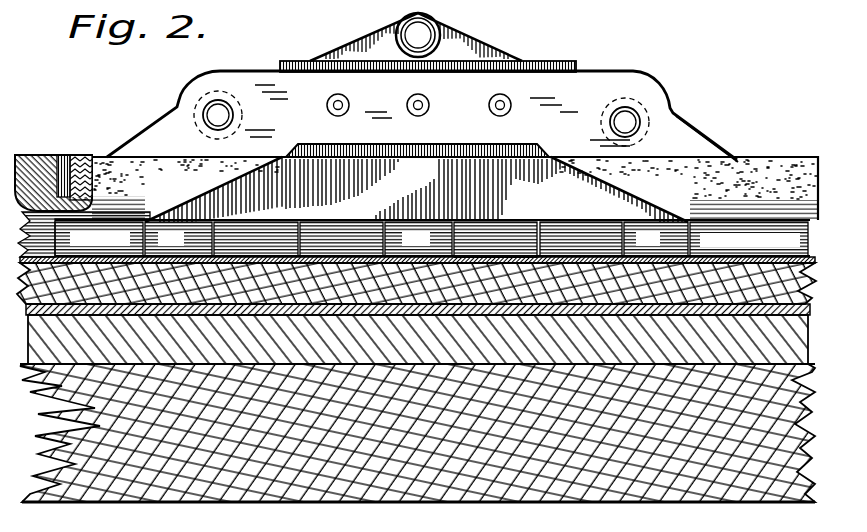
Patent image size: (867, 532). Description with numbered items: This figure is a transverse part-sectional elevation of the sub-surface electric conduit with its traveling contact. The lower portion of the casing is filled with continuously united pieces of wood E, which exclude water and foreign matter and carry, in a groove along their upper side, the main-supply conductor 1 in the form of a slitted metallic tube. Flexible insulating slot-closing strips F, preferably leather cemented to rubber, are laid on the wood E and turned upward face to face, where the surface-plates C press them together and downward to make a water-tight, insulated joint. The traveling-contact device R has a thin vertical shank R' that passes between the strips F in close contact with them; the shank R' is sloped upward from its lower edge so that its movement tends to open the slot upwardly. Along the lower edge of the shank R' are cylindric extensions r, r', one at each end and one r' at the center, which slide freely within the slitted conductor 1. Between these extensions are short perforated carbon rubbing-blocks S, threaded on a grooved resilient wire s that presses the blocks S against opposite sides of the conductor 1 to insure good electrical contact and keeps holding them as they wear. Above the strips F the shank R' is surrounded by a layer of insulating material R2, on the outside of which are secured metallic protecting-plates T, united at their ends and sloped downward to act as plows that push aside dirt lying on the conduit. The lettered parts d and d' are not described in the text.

The surface-plates C is at (50, 153).
The strip d is at (70, 160).
The packing strip d' is at (98, 158).
The traveling-contact device R is at (422, 94).
The layer of insulating material R2 is at (577, 68).
The metallic protecting-plates T is at (612, 112).
The slot-closing strips F is at (789, 171).
The shank R' is at (416, 183).
The cylindric extensions r is at (414, 234).
The central cylindric extension r' is at (365, 239).
The main-supply conductor 1 is at (749, 239).
The wood E is at (416, 283).
The wire s is at (417, 270).
The carbon rubbing-blocks S is at (524, 246).